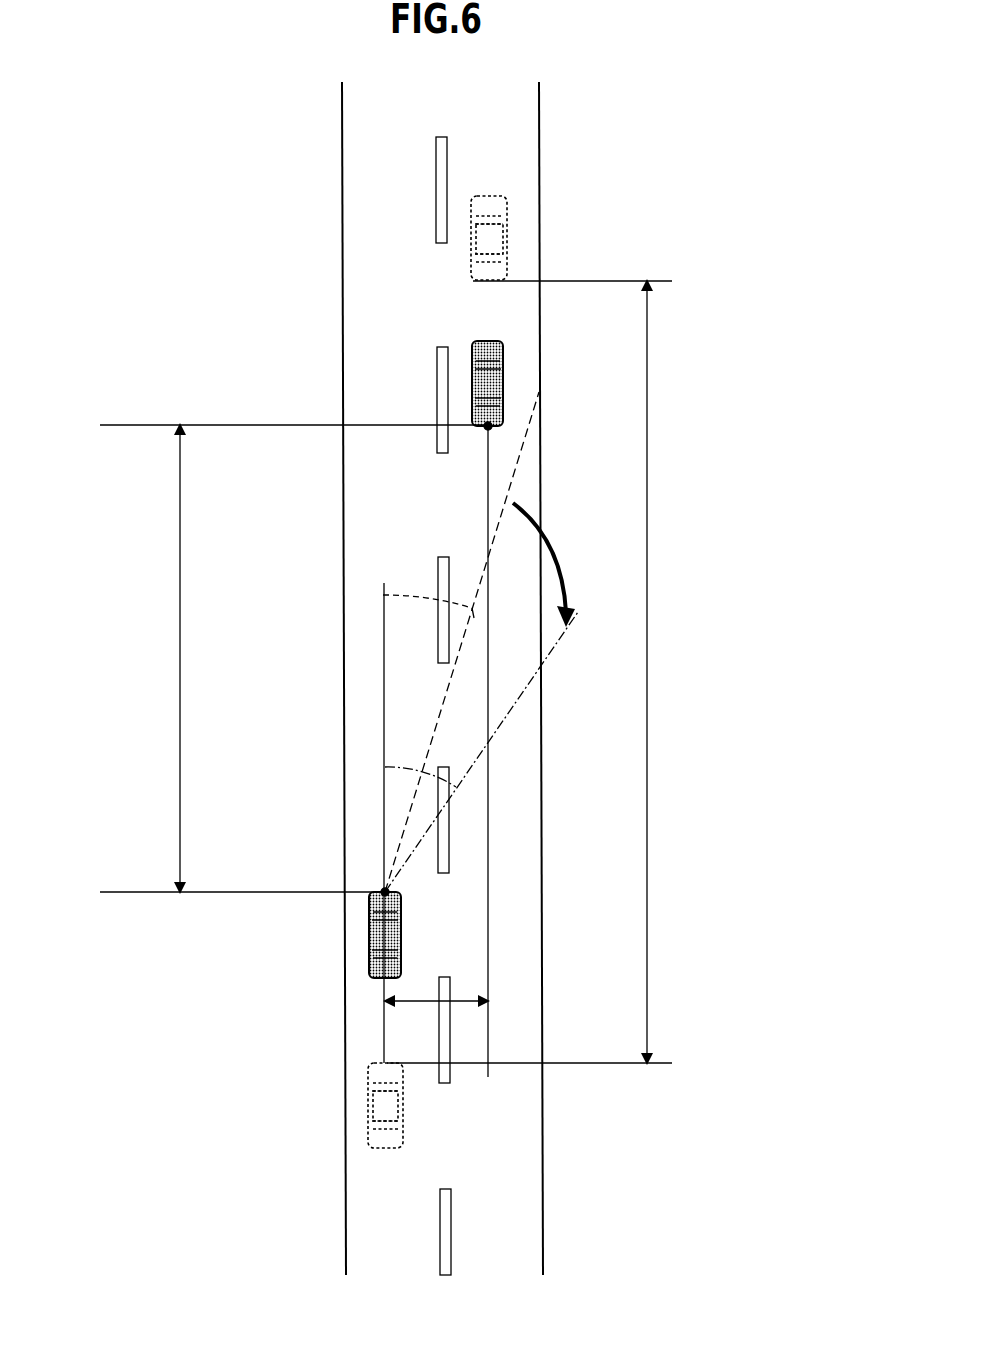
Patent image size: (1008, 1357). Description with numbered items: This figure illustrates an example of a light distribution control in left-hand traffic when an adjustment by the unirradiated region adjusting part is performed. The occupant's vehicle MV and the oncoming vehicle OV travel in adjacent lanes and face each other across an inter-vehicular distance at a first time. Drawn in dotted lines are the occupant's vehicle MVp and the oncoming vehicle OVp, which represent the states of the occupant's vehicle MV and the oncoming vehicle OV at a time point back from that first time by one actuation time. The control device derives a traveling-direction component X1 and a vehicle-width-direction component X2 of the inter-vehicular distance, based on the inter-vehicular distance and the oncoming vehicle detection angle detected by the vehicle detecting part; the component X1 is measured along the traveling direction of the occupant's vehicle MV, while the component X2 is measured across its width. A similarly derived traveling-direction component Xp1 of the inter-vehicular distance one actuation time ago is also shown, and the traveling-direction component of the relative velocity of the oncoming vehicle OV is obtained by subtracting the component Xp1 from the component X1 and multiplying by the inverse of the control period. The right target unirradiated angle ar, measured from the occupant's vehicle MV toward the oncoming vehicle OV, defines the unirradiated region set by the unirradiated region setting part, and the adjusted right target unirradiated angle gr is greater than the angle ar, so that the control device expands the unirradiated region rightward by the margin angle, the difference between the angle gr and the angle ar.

The oncoming vehicle OV is at (503, 372).
The oncoming vehicle (one actuation time ago) OVp is at (507, 232).
The occupant's vehicle MV is at (368, 950).
The occupant's vehicle (one actuation time ago) MVp is at (370, 1100).
The traveling-direction component of inter-vehicular distance X1 is at (111, 658).
The traveling-direction component of inter-vehicular distance one actuation time ago Xp1 is at (751, 672).
The vehicle-width-direction component of inter-vehicular distance X2 is at (417, 1003).
The right target unirradiated angle ar is at (405, 596).
The adjusted right target unirradiated angle gr is at (410, 768).